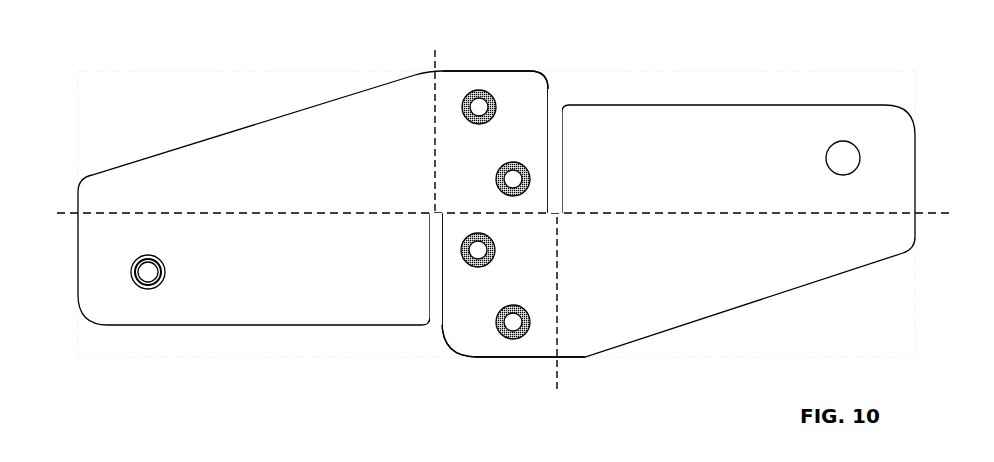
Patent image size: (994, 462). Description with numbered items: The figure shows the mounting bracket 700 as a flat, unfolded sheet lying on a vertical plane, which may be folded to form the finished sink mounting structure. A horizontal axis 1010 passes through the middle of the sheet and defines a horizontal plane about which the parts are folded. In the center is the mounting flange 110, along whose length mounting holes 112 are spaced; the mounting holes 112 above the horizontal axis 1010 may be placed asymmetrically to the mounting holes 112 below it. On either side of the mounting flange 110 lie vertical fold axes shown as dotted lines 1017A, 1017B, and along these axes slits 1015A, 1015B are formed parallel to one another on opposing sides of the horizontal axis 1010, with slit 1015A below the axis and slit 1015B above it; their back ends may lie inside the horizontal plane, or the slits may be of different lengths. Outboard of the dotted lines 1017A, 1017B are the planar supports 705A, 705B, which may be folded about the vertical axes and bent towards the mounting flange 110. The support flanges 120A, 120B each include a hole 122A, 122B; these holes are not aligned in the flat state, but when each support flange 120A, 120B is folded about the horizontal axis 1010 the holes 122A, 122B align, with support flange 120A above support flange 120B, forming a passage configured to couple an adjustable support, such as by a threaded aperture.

The mounting bracket 700 is at (160, 65).
The planar support 705A is at (308, 122).
The planar support 705B is at (693, 298).
The support flange 120A is at (275, 305).
The support flange 120B is at (700, 132).
The hole 122A is at (143, 293).
The hole 122B is at (845, 137).
The mounting flange 110 is at (521, 95).
The mounting holes 112 is at (507, 153).
The horizontal axis 1010 is at (489, 206).
The slit 1015A is at (436, 312).
The slit 1015B is at (556, 120).
The dotted line 1017A is at (436, 138).
The dotted line 1017B is at (572, 303).